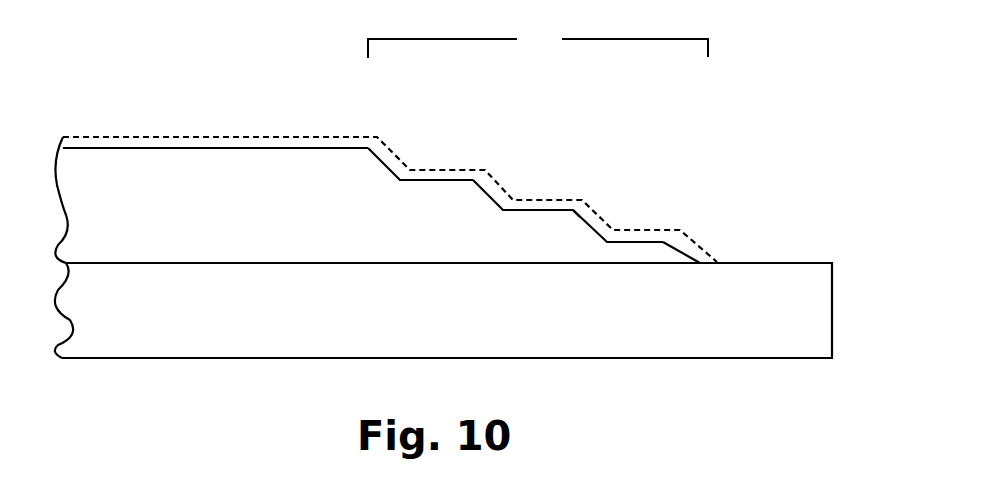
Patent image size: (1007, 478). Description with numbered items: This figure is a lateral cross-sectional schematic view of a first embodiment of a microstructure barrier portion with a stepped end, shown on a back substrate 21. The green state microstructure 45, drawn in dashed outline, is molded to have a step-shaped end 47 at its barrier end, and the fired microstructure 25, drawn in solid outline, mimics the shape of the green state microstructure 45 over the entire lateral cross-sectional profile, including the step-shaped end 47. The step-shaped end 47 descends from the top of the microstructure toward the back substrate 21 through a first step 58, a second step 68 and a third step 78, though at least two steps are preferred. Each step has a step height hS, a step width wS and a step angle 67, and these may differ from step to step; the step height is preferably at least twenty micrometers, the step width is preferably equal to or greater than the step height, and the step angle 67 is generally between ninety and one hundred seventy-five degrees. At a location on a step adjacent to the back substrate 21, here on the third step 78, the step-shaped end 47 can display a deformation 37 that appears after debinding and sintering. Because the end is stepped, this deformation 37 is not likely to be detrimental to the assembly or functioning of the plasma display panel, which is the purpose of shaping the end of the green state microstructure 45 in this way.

The back substrate 21 is at (528, 347).
The microstructure 25 is at (303, 148).
The green state microstructure 45 is at (347, 137).
The step-shaped end 47 is at (538, 43).
The first step 58 is at (465, 188).
The second step 68 is at (535, 222).
The third step 78 is at (643, 247).
The deformation 37 is at (668, 243).
The step angle 67 is at (572, 212).